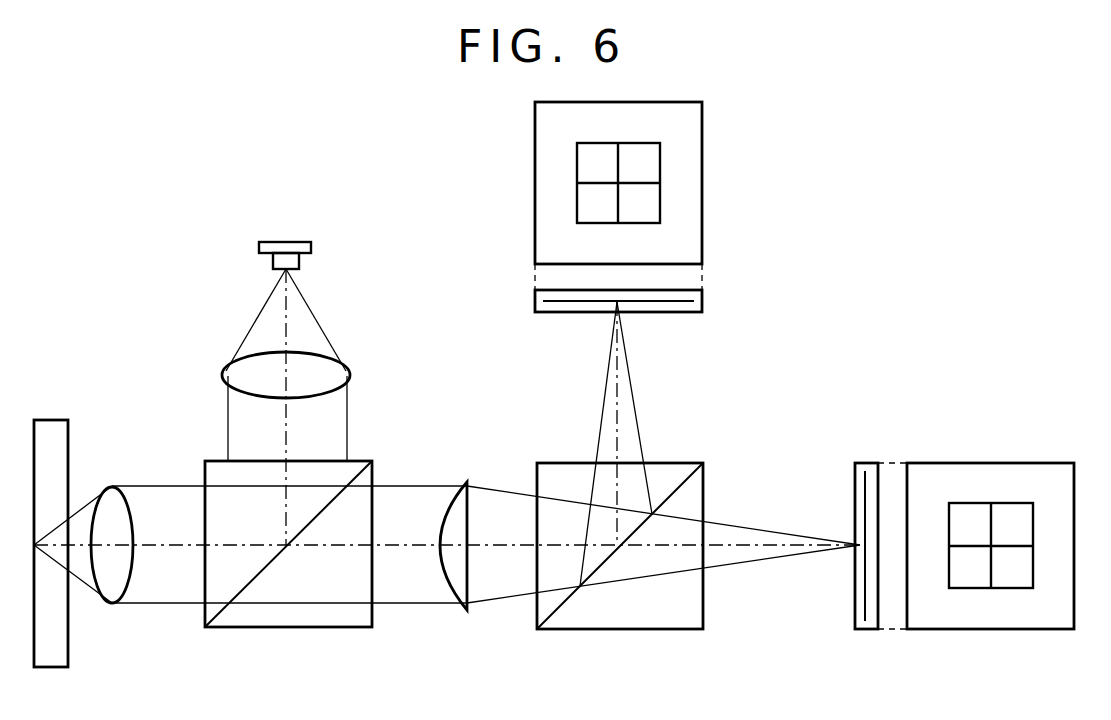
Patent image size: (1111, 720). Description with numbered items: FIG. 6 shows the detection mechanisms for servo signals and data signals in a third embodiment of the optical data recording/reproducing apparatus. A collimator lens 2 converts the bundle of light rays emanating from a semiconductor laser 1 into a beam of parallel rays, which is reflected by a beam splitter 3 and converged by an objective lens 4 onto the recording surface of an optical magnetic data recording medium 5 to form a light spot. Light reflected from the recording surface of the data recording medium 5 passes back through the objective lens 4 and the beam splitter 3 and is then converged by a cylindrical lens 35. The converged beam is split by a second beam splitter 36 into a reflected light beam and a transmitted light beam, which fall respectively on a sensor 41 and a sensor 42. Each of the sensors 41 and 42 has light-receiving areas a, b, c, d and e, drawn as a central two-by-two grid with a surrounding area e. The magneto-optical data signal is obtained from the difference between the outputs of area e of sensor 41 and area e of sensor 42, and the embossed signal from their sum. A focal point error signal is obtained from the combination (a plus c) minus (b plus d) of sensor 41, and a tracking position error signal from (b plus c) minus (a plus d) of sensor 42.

The semiconductor laser 1 is at (272, 257).
The collimator lens 2 is at (272, 375).
The beam splitter 3 is at (288, 563).
The objective lens 4 is at (112, 529).
The optical magnetic data recording medium 5 is at (51, 527).
The cylindrical lens 35 is at (458, 567).
The beam splitter 36 is at (620, 565).
The sensor 41 is at (645, 209).
The sensor 42 is at (960, 529).